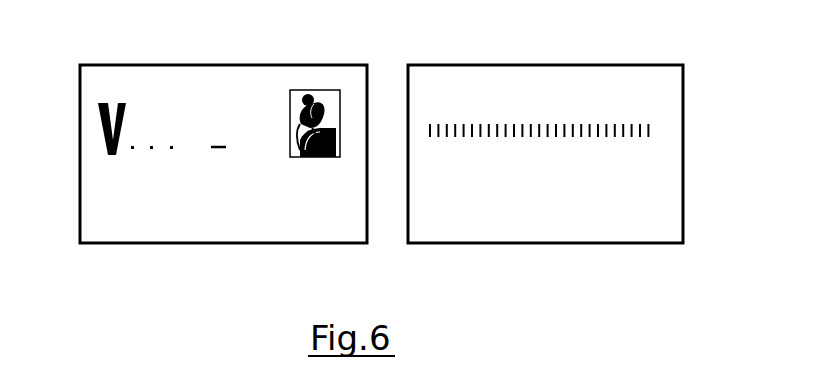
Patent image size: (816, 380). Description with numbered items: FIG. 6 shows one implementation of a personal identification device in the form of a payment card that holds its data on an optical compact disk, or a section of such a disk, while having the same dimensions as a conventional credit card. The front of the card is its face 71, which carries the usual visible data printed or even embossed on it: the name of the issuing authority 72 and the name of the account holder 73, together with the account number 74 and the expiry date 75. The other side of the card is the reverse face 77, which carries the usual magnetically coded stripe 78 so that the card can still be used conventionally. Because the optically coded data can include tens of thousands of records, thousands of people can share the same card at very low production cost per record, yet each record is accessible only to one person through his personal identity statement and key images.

The face 71 is at (250, 83).
The issuing authority name 72 is at (150, 100).
The account holder name 73 is at (88, 190).
The account number 74 is at (88, 219).
The expiry date 75 is at (302, 228).
The reverse face 77 is at (550, 78).
The magnetically coded stripe 78 is at (645, 128).